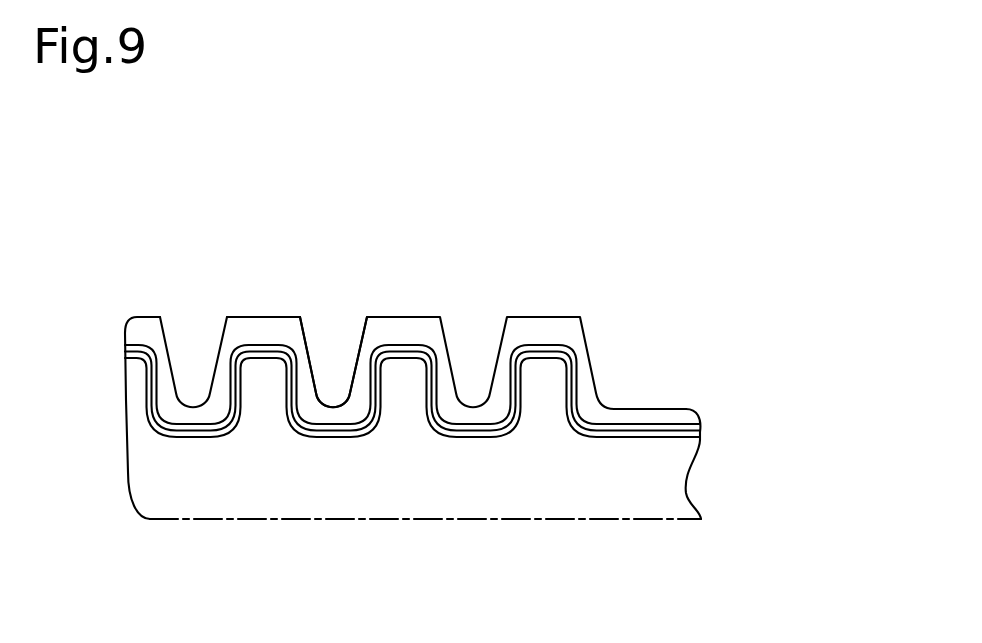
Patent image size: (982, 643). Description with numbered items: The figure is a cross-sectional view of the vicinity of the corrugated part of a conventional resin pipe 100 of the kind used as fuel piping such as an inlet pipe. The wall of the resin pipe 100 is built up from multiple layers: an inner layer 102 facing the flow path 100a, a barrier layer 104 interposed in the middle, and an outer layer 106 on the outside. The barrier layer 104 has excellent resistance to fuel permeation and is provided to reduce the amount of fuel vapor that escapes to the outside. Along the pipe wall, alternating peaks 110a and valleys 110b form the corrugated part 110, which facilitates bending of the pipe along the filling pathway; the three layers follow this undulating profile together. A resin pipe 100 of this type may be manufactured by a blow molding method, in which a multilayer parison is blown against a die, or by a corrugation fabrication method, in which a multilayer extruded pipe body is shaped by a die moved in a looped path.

The resin pipe 100 is at (826, 338).
The flow path 100a is at (637, 500).
The inner layer 102 is at (700, 436).
The barrier layer 104 is at (698, 424).
The outer layer 106 is at (685, 412).
The corrugated part 110 is at (386, 229).
The peaks 110a is at (265, 324).
The valleys 110b is at (338, 402).